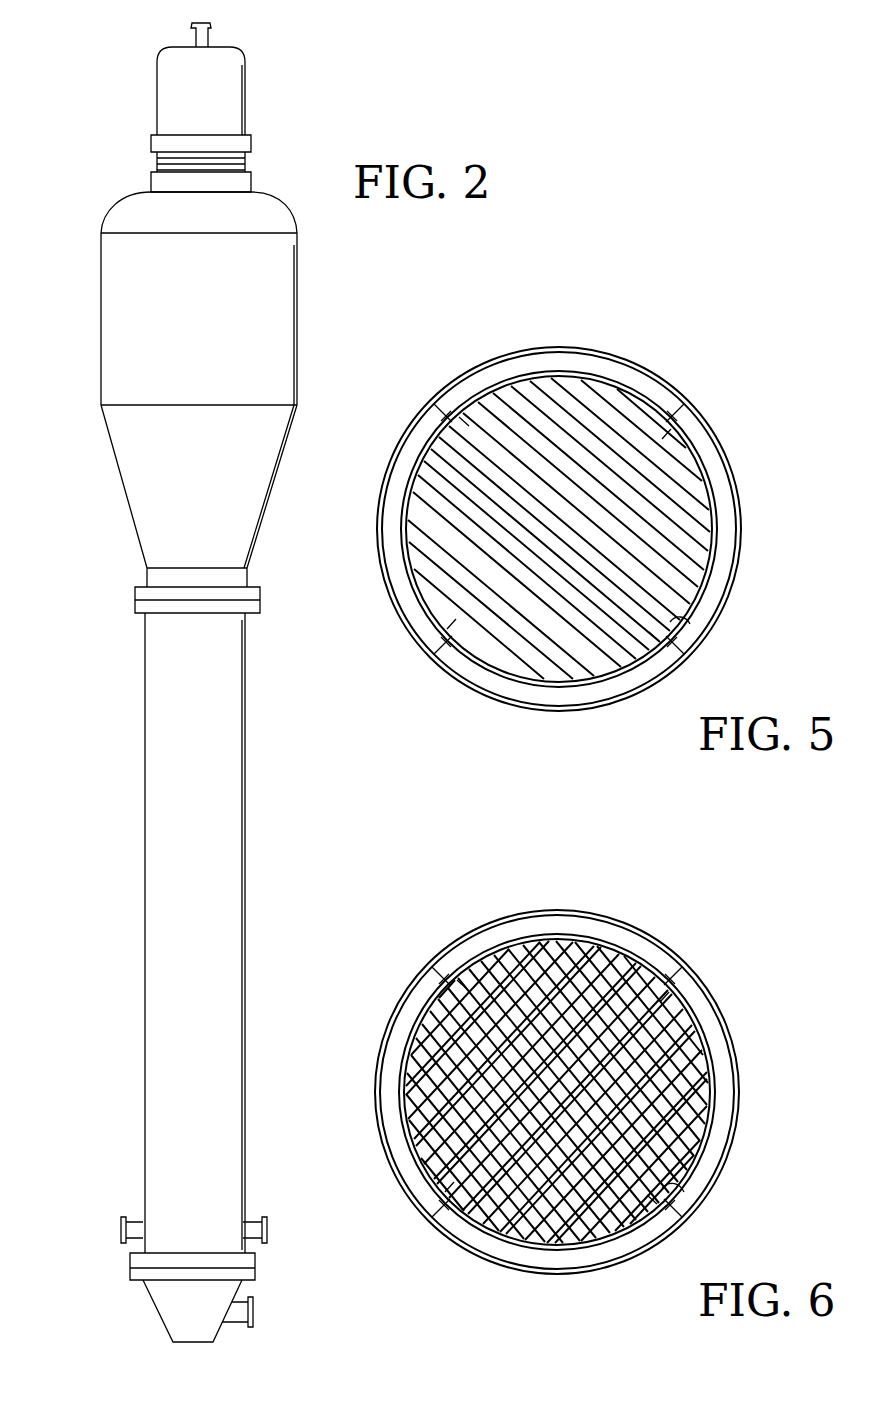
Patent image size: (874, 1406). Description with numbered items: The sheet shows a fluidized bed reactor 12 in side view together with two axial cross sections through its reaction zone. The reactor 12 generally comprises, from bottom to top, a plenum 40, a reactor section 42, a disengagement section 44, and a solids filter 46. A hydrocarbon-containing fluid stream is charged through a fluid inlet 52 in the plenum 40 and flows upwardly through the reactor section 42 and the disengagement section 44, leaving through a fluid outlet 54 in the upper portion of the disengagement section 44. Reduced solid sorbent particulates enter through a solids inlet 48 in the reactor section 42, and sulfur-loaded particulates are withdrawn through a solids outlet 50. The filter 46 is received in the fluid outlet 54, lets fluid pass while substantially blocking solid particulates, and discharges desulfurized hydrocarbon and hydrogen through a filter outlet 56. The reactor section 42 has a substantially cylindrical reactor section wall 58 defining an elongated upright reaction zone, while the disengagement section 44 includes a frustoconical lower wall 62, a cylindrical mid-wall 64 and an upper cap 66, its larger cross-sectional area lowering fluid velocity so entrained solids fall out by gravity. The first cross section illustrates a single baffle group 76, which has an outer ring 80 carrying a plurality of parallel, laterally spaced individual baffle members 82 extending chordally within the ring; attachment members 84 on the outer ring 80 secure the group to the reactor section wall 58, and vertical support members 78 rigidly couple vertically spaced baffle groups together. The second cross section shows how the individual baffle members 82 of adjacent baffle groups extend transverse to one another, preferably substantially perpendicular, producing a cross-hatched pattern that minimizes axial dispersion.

In FIG. 2, the reactor 12 is at (143, 704).
In FIG. 5, the reactor 12 is at (607, 345).
In FIG. 6, the reactor 12 is at (603, 905).
In FIG. 2, the plenum 40 is at (155, 1312).
In FIG. 2, the reactor section 42 is at (143, 923).
In FIG. 2, the disengagement section 44 is at (101, 318).
In FIG. 2, the solids filter 46 is at (157, 95).
In FIG. 2, the solids inlet 48 is at (121, 1228).
In FIG. 2, the solids outlet 50 is at (267, 1233).
In FIG. 2, the fluid inlet 52 is at (253, 1315).
In FIG. 2, the fluid outlet 54 is at (152, 188).
In FIG. 2, the filter outlet 56 is at (190, 38).
In FIG. 2, the reactor section wall 58 is at (220, 910).
In FIG. 5, the reactor section wall 58 is at (737, 464).
In FIG. 6, the reactor section wall 58 is at (730, 1030).
In FIG. 2, the frustoconical lower wall 62 is at (245, 502).
In FIG. 2, the cylindrical mid-wall 64 is at (278, 293).
In FIG. 2, the upper cap 66 is at (113, 215).
In FIG. 5, the baffle group 76 is at (627, 383).
In FIG. 6, the baffle group 76 is at (557, 1092).
In FIG. 5, the vertical support member 78 is at (690, 625).
In FIG. 6, the vertical support member 78 is at (703, 1195).
In FIG. 5, the outer ring 80 is at (718, 578).
In FIG. 6, the outer ring 80 is at (660, 1103).
In FIG. 5, the individual baffle member 82 is at (645, 528).
In FIG. 6, the individual baffle member 82 is at (665, 1130).
In FIG. 5, the attachment member 84 is at (690, 416).
In FIG. 6, the attachment member 84 is at (678, 980).